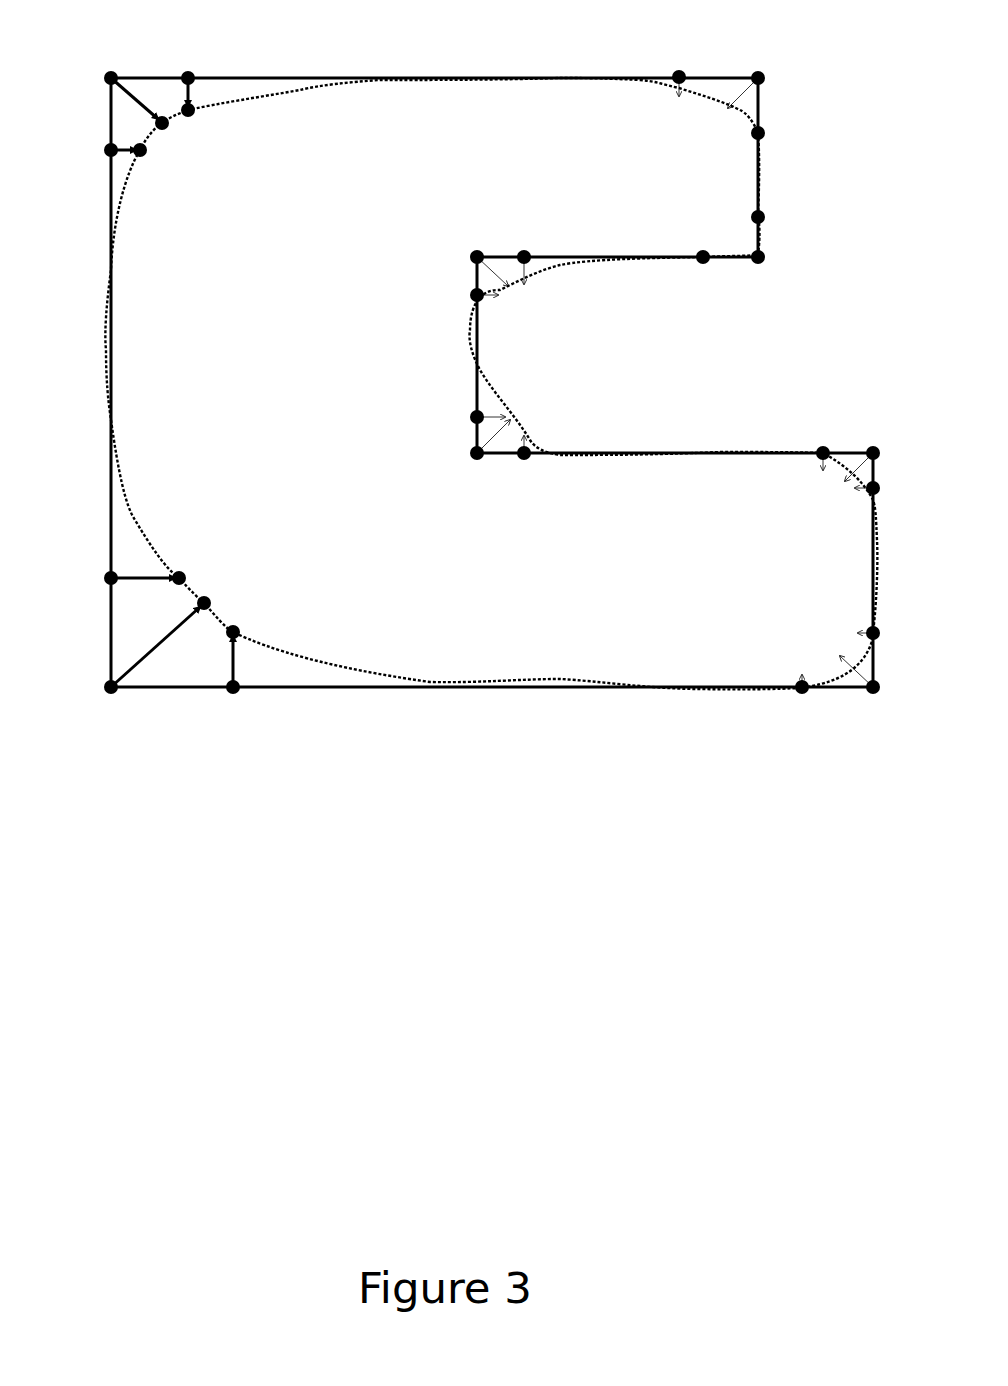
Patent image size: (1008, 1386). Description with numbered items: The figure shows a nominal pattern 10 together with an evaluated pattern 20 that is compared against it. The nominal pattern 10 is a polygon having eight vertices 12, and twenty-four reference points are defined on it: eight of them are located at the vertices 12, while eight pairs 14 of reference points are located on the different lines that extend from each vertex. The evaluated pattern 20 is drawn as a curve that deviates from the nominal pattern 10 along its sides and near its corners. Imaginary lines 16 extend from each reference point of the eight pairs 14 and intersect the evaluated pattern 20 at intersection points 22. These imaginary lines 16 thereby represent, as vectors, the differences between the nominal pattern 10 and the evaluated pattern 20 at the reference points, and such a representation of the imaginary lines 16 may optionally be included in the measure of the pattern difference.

The nominal pattern 10 is at (323, 688).
The vertices 12 is at (105, 76).
The pairs of reference points 14 is at (190, 70).
The imaginary lines 16 is at (160, 642).
The evaluated pattern 20 is at (130, 528).
The intersection points 22 is at (207, 610).